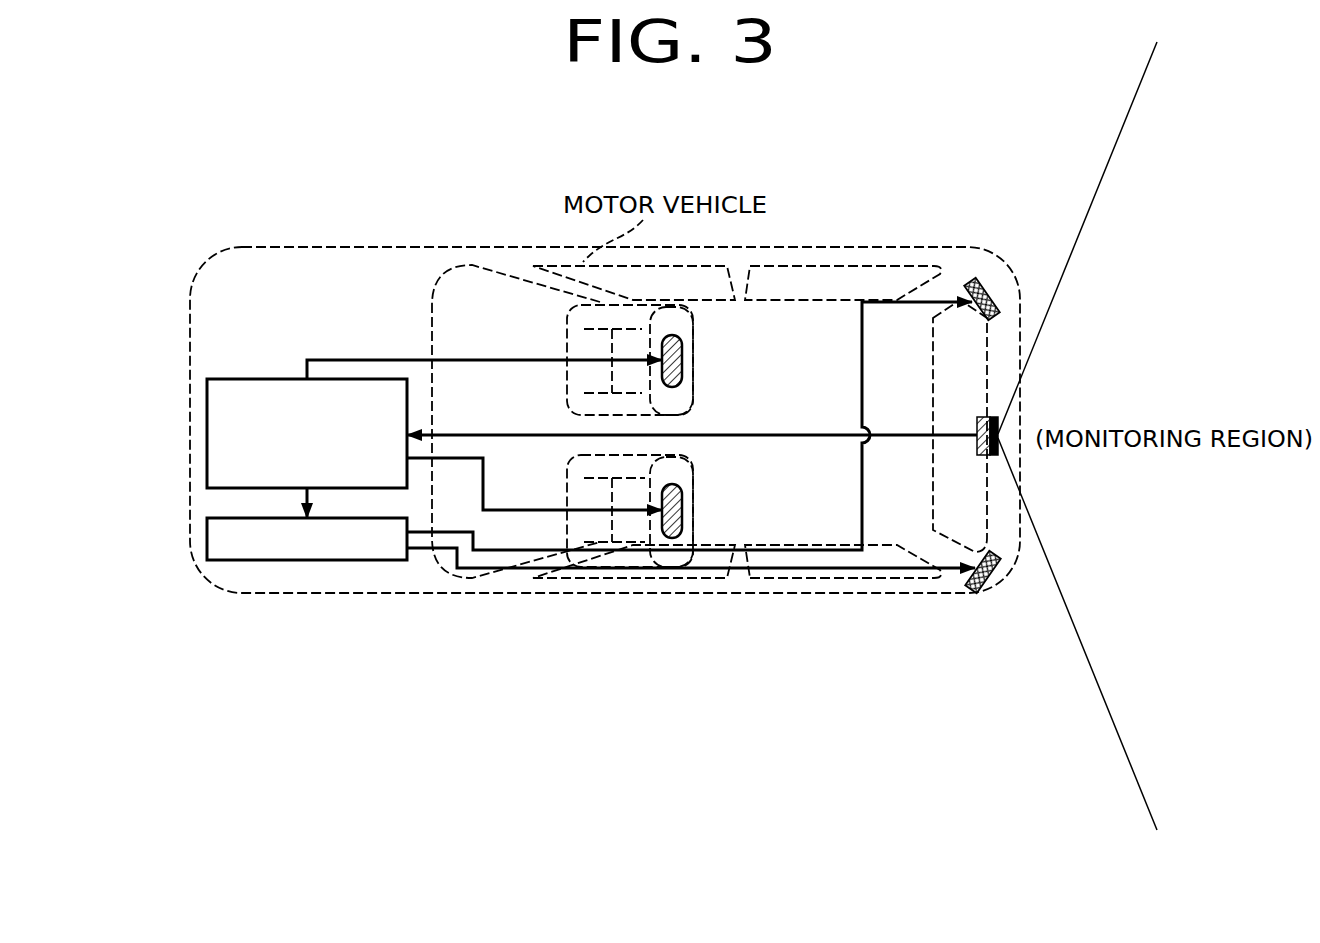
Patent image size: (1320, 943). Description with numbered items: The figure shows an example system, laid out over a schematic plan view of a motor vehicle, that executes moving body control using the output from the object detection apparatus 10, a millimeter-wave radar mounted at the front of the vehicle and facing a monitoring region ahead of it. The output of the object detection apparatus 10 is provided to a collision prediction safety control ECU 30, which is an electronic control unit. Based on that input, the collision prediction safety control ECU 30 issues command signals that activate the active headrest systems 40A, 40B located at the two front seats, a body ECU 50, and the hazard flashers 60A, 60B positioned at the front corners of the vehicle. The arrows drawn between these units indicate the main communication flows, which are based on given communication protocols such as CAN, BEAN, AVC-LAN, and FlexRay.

The object detection apparatus 10 is at (990, 415).
The collision prediction safety control ECU 30 is at (207, 433).
The body ECU 50 is at (207, 539).
The active headrest system 40A is at (683, 360).
The active headrest system 40B is at (683, 510).
The hazard flasher 60A is at (995, 290).
The hazard flasher 60B is at (997, 588).